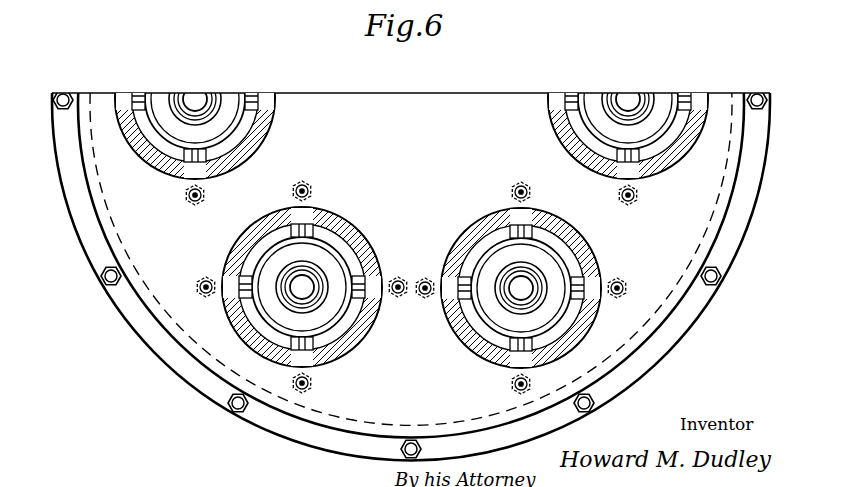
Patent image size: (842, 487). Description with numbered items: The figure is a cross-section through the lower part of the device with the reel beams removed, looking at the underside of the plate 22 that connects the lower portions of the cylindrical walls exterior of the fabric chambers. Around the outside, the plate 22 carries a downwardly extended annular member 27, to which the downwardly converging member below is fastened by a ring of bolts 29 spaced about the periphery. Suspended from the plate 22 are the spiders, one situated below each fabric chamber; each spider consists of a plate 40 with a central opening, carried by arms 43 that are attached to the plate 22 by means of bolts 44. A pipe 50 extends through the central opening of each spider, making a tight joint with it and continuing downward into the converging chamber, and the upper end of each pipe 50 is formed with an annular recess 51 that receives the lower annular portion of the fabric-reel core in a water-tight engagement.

The plate 22 is at (411, 259).
The downwardly extended annular member 27 is at (88, 170).
The bolts 29 is at (104, 282).
The plate 40 is at (350, 256).
The arms 43 is at (257, 126).
The bolts 44 is at (204, 278).
The pipe 50 is at (293, 268).
The annular recess 51 is at (318, 280).